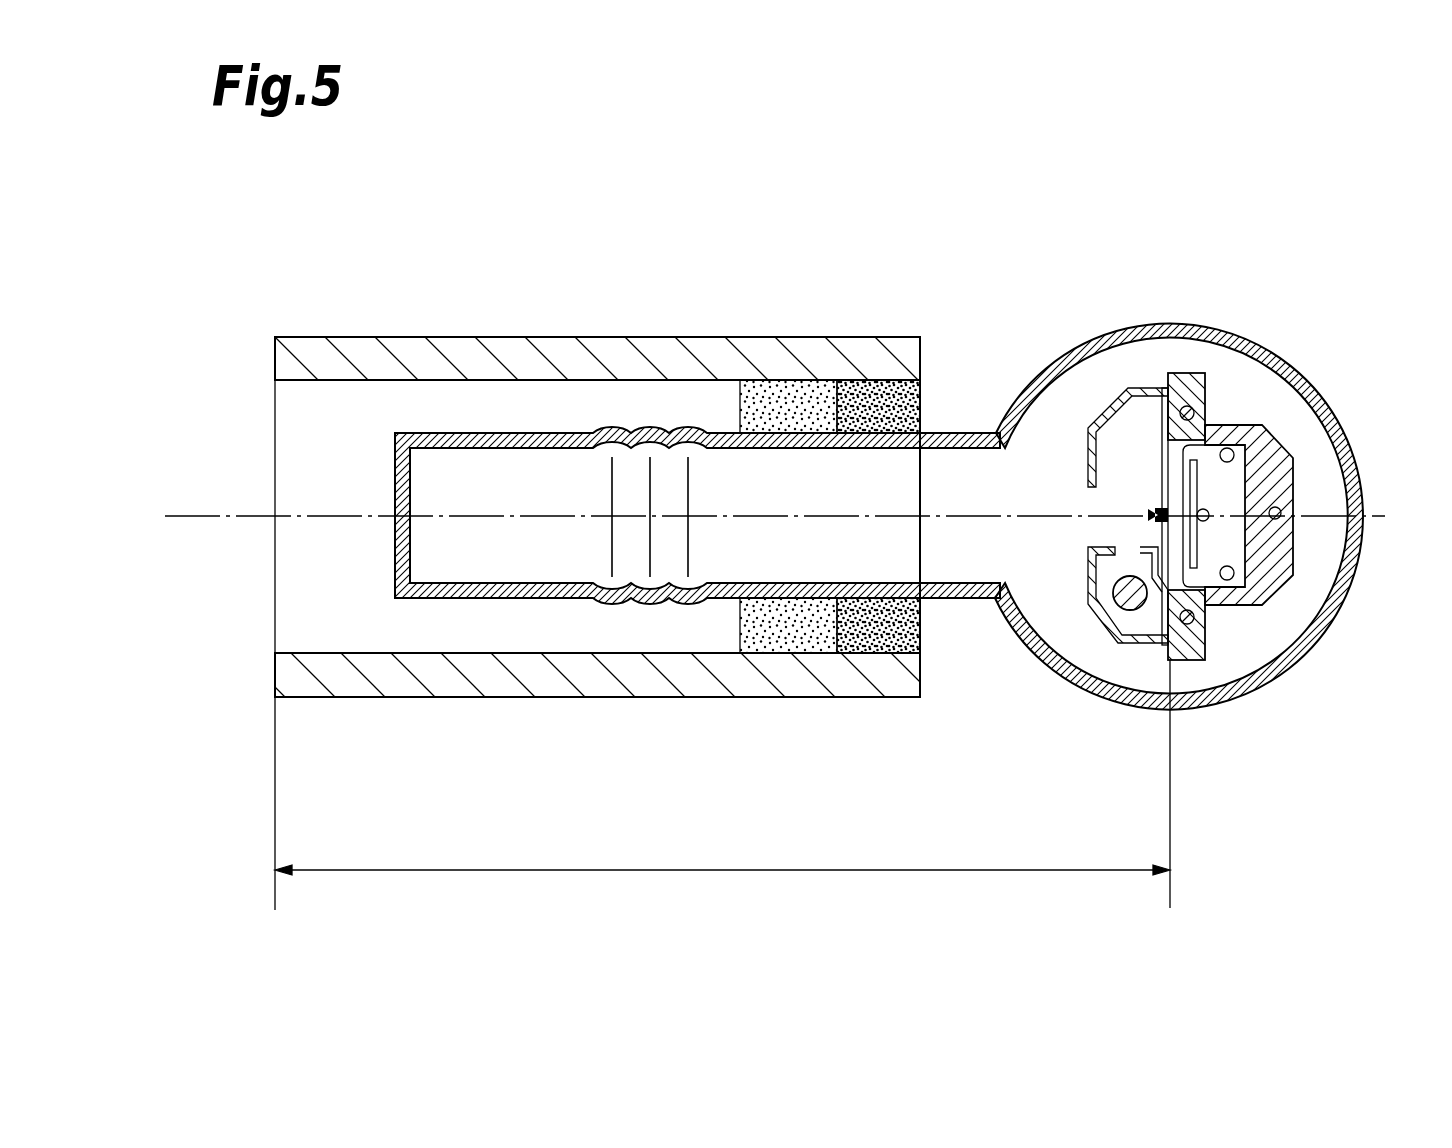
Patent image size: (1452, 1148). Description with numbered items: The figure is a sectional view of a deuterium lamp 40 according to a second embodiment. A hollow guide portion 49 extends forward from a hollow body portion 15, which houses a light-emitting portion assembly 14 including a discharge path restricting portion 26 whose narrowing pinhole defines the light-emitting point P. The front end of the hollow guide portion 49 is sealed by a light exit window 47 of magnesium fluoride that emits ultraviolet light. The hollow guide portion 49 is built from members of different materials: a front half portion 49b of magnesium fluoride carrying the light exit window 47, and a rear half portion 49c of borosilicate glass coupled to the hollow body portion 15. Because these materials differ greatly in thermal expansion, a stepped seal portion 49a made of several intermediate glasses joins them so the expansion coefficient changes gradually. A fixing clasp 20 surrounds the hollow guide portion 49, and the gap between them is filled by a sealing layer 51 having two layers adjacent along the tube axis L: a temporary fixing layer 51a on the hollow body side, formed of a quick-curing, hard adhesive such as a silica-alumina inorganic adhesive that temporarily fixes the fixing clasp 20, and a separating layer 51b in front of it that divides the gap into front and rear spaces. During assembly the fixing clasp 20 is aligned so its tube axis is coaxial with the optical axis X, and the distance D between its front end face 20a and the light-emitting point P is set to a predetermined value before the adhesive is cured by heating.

The deuterium lamp 40 is at (1047, 237).
The fixing clasp 20 is at (430, 690).
The front end face 20a is at (275, 597).
The light exit window 47 is at (397, 477).
The hollow guide portion 49 is at (601, 532).
The stepped seal portion 49a is at (670, 433).
The front half portion 49b is at (517, 433).
The rear half portion 49c is at (947, 433).
The sealing layer 51 is at (830, 605).
The temporary fixing layer 51a is at (877, 634).
The separating layer 51b is at (790, 640).
The hollow body portion 15 is at (1188, 323).
The light-emitting portion assembly 14 is at (1244, 640).
The discharge path restricting portion 26 is at (1165, 505).
The light-emitting point P is at (1160, 513).
The tube axis L is at (367, 516).
The optical axis X is at (955, 516).
The distance D is at (745, 873).